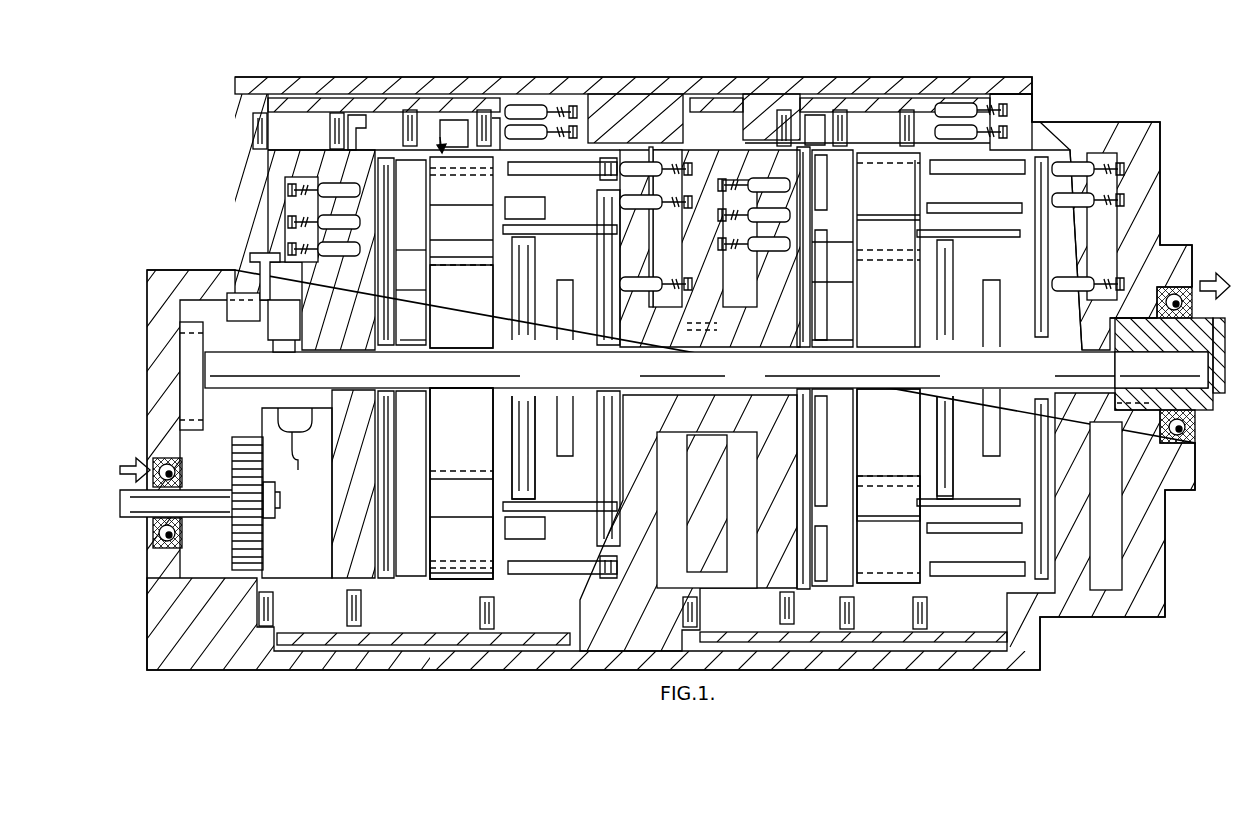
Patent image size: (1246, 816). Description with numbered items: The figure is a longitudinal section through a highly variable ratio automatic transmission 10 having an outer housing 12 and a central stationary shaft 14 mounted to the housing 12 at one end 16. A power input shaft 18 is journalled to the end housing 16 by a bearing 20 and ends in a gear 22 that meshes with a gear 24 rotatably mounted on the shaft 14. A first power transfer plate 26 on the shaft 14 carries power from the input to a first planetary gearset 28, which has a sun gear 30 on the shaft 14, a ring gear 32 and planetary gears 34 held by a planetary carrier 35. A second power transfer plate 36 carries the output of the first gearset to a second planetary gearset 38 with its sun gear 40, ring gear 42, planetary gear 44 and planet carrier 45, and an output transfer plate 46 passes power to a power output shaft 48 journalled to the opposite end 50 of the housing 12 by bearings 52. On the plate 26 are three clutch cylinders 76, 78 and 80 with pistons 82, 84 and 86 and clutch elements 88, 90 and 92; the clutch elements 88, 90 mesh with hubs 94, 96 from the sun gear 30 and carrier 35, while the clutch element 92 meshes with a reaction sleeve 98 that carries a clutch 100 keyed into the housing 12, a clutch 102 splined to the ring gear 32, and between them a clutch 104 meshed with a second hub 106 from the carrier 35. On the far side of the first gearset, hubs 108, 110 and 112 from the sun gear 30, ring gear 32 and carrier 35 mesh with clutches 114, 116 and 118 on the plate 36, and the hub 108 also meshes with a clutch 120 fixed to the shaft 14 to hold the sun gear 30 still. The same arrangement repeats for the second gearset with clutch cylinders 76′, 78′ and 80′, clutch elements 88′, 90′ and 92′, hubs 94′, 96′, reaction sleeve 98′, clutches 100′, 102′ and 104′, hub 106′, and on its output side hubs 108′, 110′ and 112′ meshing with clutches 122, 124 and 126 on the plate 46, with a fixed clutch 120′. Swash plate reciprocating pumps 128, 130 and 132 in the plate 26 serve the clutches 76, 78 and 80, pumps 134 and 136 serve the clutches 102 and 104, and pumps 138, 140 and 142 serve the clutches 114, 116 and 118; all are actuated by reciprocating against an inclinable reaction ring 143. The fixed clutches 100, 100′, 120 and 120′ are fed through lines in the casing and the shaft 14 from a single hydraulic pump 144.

The variable ratio automatic transmission 10 is at (1133, 103).
The outer housing 12 is at (770, 100).
The central stationary shaft 14 is at (757, 377).
The end housing 16 is at (152, 365).
The power input shaft 18 is at (147, 500).
The bearing 20 is at (182, 540).
The gear 22 is at (253, 560).
The gear 24 is at (235, 320).
The first power transfer plate 26 is at (343, 467).
The first planetary gearset 28 is at (445, 134).
The sun gear 30 is at (472, 441).
The ring gear 32 is at (460, 615).
The planetary gears 34 is at (483, 209).
The planetary carrier 35 is at (462, 520).
The second power transfer plate 36 is at (633, 585).
The second planetary gearset 38 is at (960, 105).
The sun gear 40 is at (902, 434).
The ring gear 42 is at (890, 580).
The planetary gear 44 is at (900, 197).
The planet carrier 45 is at (913, 207).
The output transfer plate 46 is at (1063, 250).
The power output shaft 48 is at (1200, 392).
The end of housing 50 is at (1193, 262).
The bearings 52 is at (1190, 438).
The clutch cylinder 76 is at (420, 313).
The clutch cylinder 76′ is at (845, 311).
The clutch cylinder 78 is at (424, 215).
The clutch cylinder 78′ is at (845, 204).
The clutch cylinder 80 is at (340, 112).
The clutch cylinder 80′ is at (770, 137).
The piston 82 is at (388, 258).
The piston 84 is at (430, 215).
The piston 86 is at (405, 112).
The clutch element 88 is at (396, 290).
The clutch element 88′ is at (812, 282).
The clutch element 90 is at (432, 208).
The clutch element 90′ is at (833, 215).
The clutch element 92 is at (348, 140).
The clutch element 92′ is at (873, 146).
The hub 94 is at (406, 350).
The hub 94′ is at (843, 340).
The hub 96 is at (418, 235).
The hub 96′ is at (812, 242).
The reaction sleeve 98 is at (292, 103).
The reaction sleeve 98′ is at (735, 104).
The clutch 100 is at (278, 104).
The clutch 100′ is at (720, 104).
The clutch 102 is at (496, 125).
The clutch 102′ is at (863, 125).
The clutch 104 is at (462, 130).
The clutch 104′ is at (808, 120).
The second hub 106 is at (478, 112).
The hub 106′ is at (843, 110).
The hub 108 is at (550, 240).
The hub 108′ is at (975, 242).
The hub 110 is at (505, 175).
The hub 110′ is at (935, 174).
The hub 112 is at (525, 225).
The hub 112′ is at (940, 208).
The clutch 114 is at (590, 350).
The clutch 116 is at (597, 181).
The clutch 118 is at (540, 221).
The clutch 120 is at (539, 427).
The clutch 120′ is at (964, 427).
The clutch 122 is at (1020, 323).
The clutch 124 is at (1013, 168).
The clutch 126 is at (1100, 190).
The reciprocating pump 128 is at (323, 247).
The reciprocating pump 130 is at (327, 217).
The reciprocating pump 132 is at (318, 188).
The reciprocating pump 134 is at (560, 128).
The reciprocating pump 136 is at (530, 106).
The pump 138 is at (637, 284).
The pump 140 is at (690, 157).
The pump 142 is at (690, 205).
The inclinable reaction ring 143 is at (295, 178).
The hydraulic pump 144 is at (290, 320).